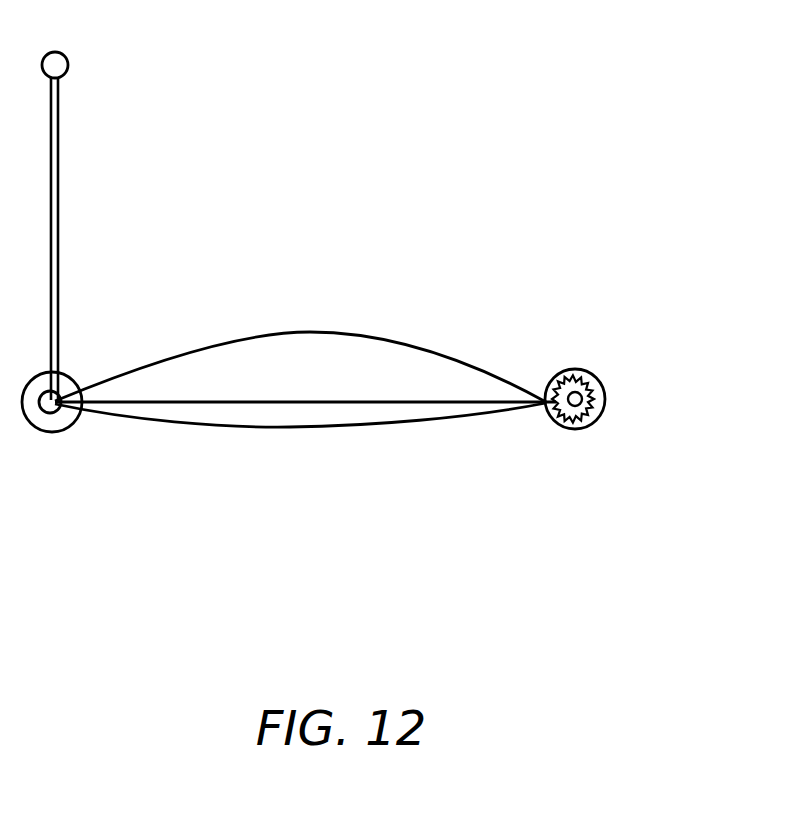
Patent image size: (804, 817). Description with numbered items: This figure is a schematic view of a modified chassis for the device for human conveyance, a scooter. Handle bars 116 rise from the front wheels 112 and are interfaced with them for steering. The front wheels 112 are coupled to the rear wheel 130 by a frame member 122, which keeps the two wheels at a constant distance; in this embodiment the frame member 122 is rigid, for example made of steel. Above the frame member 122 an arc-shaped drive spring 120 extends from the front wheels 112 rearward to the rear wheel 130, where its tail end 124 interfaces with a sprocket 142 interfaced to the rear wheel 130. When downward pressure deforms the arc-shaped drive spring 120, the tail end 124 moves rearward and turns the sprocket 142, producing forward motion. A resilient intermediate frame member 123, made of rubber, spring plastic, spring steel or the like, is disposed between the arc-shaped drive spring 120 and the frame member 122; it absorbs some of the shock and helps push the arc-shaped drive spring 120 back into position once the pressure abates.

The handle bars 116 is at (68, 63).
The front wheels 112 is at (44, 432).
The arc-shaped drive spring 120 is at (445, 357).
The frame member 122 is at (298, 427).
The resilient intermediate frame member 123 is at (200, 403).
The rear wheel 130 is at (622, 393).
The sprocket 142 is at (600, 400).
The tail end 124 is at (596, 414).